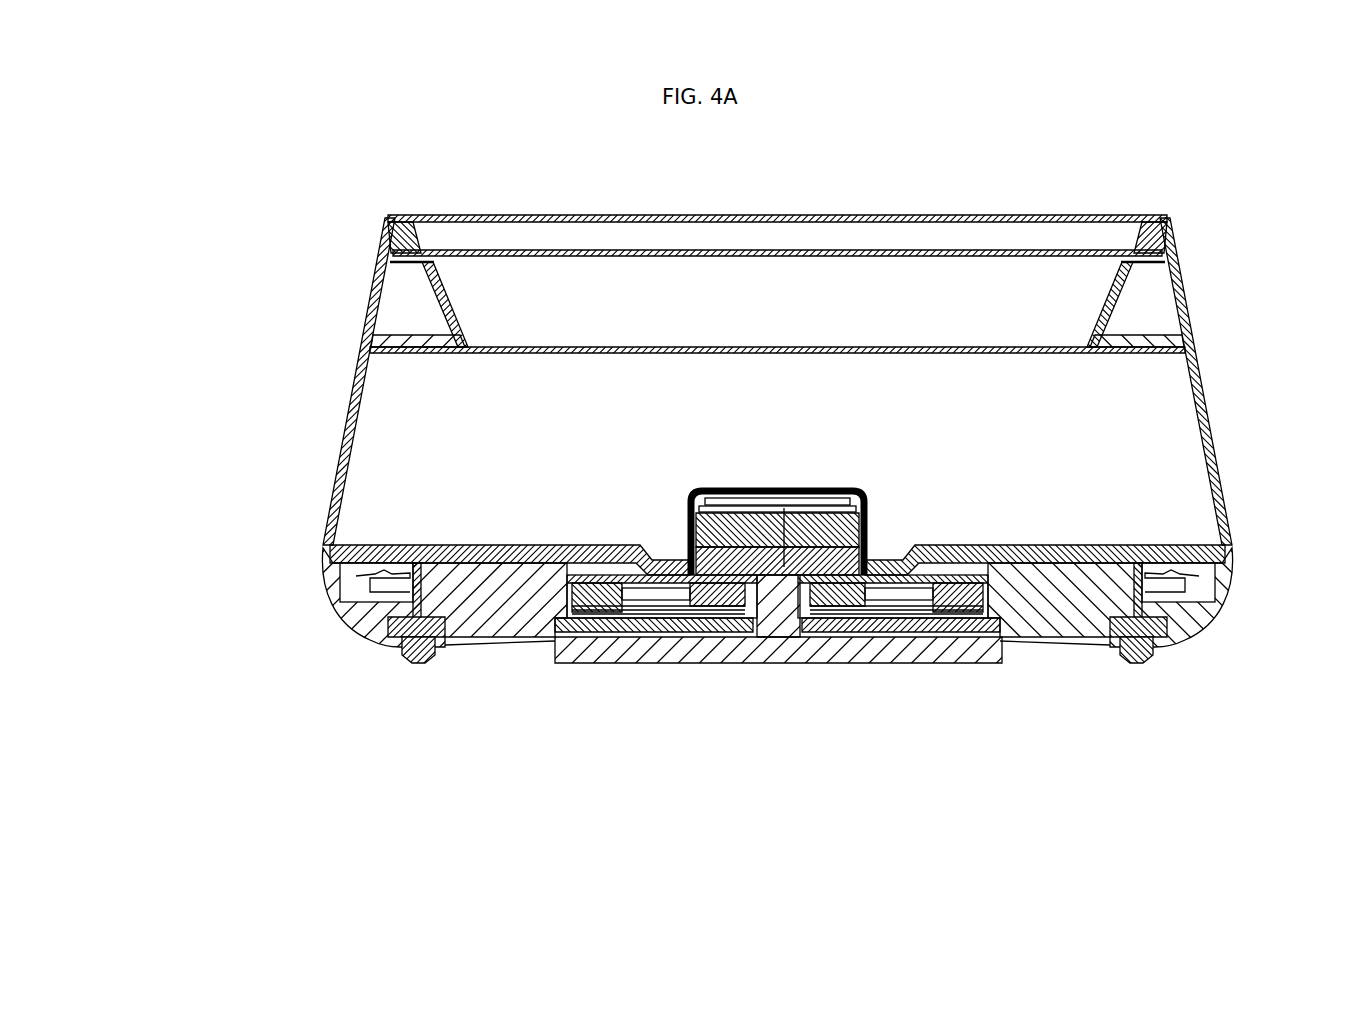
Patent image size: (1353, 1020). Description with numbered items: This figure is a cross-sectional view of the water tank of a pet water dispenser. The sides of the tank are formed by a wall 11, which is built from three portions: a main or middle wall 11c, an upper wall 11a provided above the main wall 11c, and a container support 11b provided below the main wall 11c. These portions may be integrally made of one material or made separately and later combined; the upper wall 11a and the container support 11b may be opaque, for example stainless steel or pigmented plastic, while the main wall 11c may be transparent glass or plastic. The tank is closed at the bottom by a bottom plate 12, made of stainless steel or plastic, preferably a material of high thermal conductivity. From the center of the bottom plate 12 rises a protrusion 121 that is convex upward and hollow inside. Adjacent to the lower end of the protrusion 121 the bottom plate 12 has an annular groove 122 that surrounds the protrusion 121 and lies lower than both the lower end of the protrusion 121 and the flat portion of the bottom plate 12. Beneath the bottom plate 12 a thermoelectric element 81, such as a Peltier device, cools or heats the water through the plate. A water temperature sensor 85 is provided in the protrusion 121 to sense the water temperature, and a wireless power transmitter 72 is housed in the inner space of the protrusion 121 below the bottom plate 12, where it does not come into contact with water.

The wall 11 is at (186, 266).
The upper wall 11a is at (366, 292).
The container support 11b is at (317, 571).
The main wall 11c is at (348, 398).
The bottom plate 12 is at (1118, 535).
The protrusion 121 is at (783, 508).
The groove 122 is at (875, 556).
The thermoelectric element 81 is at (498, 600).
The water temperature sensor 85 is at (846, 612).
The wireless power transmitter 72 is at (776, 598).